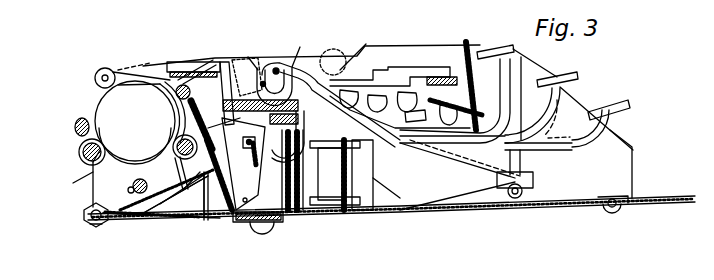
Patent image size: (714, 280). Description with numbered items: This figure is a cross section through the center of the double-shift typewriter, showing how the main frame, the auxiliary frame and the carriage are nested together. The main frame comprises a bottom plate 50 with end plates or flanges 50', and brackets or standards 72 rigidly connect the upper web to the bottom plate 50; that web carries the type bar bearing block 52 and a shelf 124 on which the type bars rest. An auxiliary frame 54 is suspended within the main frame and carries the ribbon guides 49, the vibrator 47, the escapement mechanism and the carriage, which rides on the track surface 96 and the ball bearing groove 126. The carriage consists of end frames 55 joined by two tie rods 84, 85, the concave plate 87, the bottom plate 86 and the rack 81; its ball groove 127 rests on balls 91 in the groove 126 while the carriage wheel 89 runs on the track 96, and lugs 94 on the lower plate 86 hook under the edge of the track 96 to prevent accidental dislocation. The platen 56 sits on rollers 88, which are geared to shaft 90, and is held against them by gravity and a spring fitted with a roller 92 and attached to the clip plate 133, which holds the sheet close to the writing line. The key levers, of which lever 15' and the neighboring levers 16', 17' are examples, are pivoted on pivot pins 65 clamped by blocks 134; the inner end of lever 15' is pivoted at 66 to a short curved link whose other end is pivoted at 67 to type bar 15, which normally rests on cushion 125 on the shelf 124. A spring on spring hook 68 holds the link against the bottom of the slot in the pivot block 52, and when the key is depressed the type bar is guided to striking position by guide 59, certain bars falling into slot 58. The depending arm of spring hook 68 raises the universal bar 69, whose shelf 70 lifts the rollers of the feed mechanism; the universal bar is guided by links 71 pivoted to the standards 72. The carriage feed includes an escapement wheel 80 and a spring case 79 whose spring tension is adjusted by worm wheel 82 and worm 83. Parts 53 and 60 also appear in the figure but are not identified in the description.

The type bar 15 is at (350, 81).
The key lever 15' is at (569, 99).
The key lever 16' is at (607, 114).
The key lever 17' is at (478, 82).
The ribbon vibrator 47 is at (186, 78).
The ribbon guides 49 is at (183, 62).
The bottom plate 50 is at (391, 175).
The end plates or flanges 50' is at (390, 68).
The type bar bearing block 52 is at (266, 72).
The pivot bolt 53 is at (276, 67).
The auxiliary frame 54 is at (346, 179).
The end frames 55 is at (156, 151).
The platen 56 is at (135, 121).
The slot 58 is at (335, 55).
The guide 59 is at (216, 60).
The block 60 is at (279, 126).
The pivot pins 65 is at (400, 106).
The pivot 66 is at (312, 58).
The pivot 67 is at (265, 54).
The spring hook 68 is at (304, 69).
The universal bar 69 is at (313, 164).
The shelf 70 is at (309, 200).
The links 71 is at (335, 153).
The brackets or standards 72 is at (363, 175).
The spring case 79 is at (243, 164).
The escapement wheel 80 is at (230, 216).
The rack 81 is at (224, 119).
The worm wheel 82 is at (267, 156).
The worm 83 is at (259, 142).
The tie rod 84 is at (194, 117).
The tie rod 85 is at (75, 128).
The bottom plate 86 is at (127, 215).
The concave plate 87 is at (76, 182).
The rollers 88 is at (79, 152).
The carriage wheel 89 is at (152, 183).
The shaft 90 is at (121, 189).
The balls 91 is at (92, 220).
The roller 92 is at (100, 70).
The lugs 94 is at (167, 205).
The track surface 96 is at (219, 175).
The shelf 124 is at (483, 86).
The cushion 125 is at (447, 75).
The ball bearing groove 126 is at (97, 226).
The ball groove 127 is at (90, 203).
The clip plate 133 is at (135, 134).
The blocks 134 is at (456, 104).